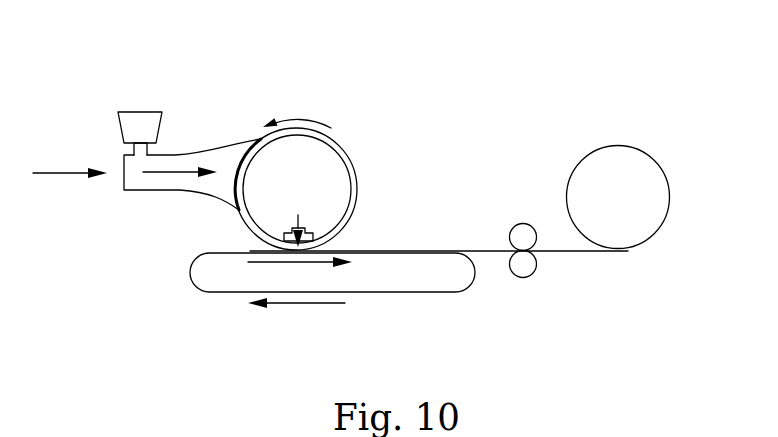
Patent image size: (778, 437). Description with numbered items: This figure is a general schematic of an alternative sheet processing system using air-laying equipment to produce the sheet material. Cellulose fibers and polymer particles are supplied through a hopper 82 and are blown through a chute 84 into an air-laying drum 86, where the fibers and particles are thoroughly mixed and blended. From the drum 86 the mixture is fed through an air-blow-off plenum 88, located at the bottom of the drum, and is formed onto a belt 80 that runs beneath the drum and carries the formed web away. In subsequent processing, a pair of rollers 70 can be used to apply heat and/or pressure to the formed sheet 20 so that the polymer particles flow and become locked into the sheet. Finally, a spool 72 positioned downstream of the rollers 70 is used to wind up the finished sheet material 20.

The sheet 20 is at (427, 251).
The rollers 70 is at (523, 233).
The spool 72 is at (607, 167).
The belt 80 is at (427, 292).
The hopper 82 is at (140, 120).
The chute 84 is at (185, 163).
The air-laying drum 86 is at (345, 150).
The air-blow-off plenum 88 is at (305, 228).